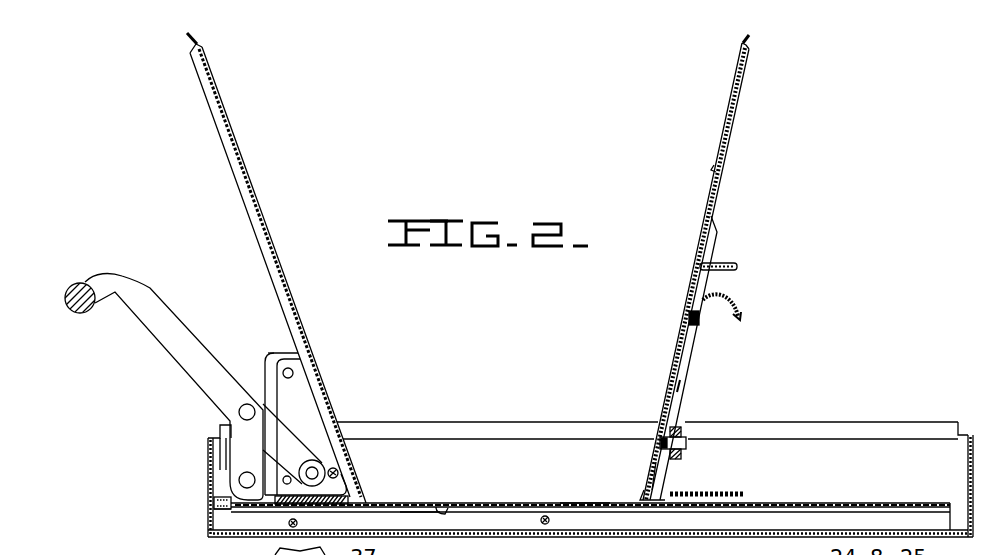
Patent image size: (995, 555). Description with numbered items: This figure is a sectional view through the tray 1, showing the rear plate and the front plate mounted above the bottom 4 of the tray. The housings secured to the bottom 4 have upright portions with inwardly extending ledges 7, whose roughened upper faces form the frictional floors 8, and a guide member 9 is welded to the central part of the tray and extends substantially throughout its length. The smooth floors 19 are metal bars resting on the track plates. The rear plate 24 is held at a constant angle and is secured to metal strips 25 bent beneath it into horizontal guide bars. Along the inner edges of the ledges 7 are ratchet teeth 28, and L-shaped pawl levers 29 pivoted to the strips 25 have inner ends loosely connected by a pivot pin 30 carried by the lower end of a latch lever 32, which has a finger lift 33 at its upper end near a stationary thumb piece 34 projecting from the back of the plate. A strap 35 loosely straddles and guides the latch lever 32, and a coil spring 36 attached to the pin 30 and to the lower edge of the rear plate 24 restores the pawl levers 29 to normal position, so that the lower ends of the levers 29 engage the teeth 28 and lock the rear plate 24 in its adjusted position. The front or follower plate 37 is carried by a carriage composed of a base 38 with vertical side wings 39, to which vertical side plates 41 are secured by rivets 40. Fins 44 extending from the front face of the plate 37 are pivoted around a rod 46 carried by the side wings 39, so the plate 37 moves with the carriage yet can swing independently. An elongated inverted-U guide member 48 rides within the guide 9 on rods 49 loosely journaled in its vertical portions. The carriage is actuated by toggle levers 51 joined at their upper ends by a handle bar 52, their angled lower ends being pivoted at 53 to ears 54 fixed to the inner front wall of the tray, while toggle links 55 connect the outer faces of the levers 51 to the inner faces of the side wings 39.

The tray 1 is at (497, 425).
The bottom of the tray 4 is at (228, 538).
The ledges 7 is at (940, 503).
The frictional floors 8 is at (230, 497).
The guide member 9 is at (238, 524).
The smooth floors 19 is at (214, 510).
The rear plate 24 is at (724, 123).
The metal strips 25 is at (700, 348).
The ratchet teeth 28 is at (600, 504).
The pawl levers 29 is at (679, 434).
The pivot pin 30 is at (687, 451).
The latch lever 32 is at (681, 384).
The finger lift 33 is at (742, 306).
The thumb piece 34 is at (738, 266).
The strap 35 is at (700, 319).
The coil spring 36 is at (660, 473).
The front plate 37 is at (240, 148).
The base 38 is at (407, 497).
The side wings 39 is at (318, 404).
The rivets 40 is at (284, 371).
The side plates 41 is at (270, 354).
The fins 44 is at (420, 495).
The rod 46 is at (337, 472).
The guide member 48 is at (448, 507).
The rods 49 is at (549, 520).
The toggle levers 51 is at (163, 340).
The handle bar 52 is at (67, 288).
The pivot 53 is at (239, 483).
The ears 54 is at (222, 468).
The toggle links 55 is at (294, 445).